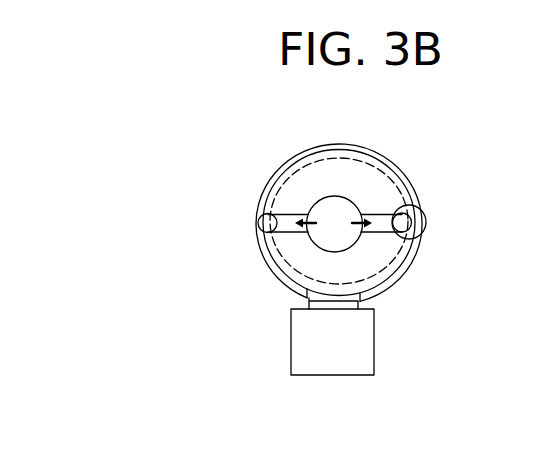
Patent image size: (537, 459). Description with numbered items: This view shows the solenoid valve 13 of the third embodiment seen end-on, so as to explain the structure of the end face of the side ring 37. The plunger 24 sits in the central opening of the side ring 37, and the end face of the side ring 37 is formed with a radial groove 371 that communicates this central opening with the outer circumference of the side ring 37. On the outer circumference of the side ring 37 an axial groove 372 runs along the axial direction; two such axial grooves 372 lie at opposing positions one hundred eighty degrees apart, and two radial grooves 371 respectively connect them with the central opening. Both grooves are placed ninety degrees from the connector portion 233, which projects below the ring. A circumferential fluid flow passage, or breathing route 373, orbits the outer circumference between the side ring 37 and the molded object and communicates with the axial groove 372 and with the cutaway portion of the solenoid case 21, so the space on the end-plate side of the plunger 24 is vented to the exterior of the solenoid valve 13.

The solenoid valve 13 is at (336, 261).
The solenoid case 21 is at (280, 283).
The plunger 24 is at (330, 214).
The side ring 37 is at (392, 272).
The radial groove 371 is at (277, 214).
The axial groove 372 is at (262, 223).
The fluid flow passage (breathing route) 373 is at (406, 262).
The connector portion 233 is at (353, 349).